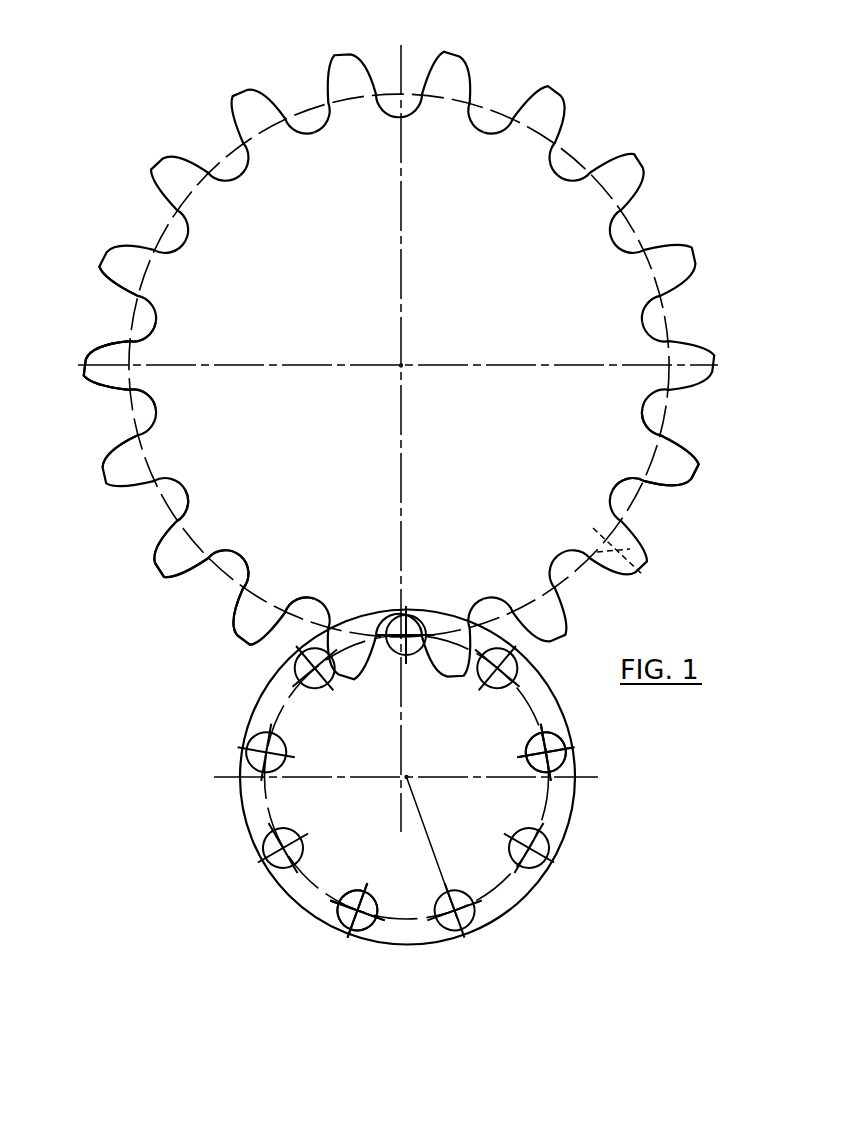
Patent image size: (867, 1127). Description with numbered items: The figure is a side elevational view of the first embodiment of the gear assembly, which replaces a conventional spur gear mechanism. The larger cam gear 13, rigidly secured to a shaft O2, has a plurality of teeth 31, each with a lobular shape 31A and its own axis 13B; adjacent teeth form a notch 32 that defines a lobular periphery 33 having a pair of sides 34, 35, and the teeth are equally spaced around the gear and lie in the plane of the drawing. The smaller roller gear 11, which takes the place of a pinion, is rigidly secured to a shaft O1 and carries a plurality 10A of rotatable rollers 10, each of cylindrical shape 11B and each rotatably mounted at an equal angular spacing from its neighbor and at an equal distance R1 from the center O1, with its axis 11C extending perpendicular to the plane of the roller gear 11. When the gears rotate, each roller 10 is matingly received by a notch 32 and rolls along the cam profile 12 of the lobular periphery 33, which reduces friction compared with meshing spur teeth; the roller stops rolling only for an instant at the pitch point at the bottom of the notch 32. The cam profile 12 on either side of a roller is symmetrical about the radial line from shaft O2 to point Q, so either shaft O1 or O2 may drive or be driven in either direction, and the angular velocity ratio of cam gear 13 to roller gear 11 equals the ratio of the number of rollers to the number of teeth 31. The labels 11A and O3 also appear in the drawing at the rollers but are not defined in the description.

The rotatable roller 10 is at (318, 690).
The plurality of rotatable rollers 10A is at (196, 778).
The roller gear 11 is at (240, 828).
The roller 11A is at (540, 751).
The cylindrical shape 11B is at (565, 733).
The roller axis 11C is at (546, 860).
The cam profile 12 is at (180, 576).
The cam gear 13 is at (302, 460).
The tooth axis 13B is at (640, 547).
The teeth 31 is at (138, 509).
The lobular shape 31A is at (712, 426).
The notch 32 is at (606, 90).
The lobular periphery 33 is at (84, 416).
The side of lobular periphery 34 is at (110, 283).
The side of lobular periphery 35 is at (110, 338).
The shaft O1 is at (410, 780).
The shaft O2 is at (403, 368).
The roller center O3 is at (296, 682).
The symmetry point Q is at (421, 619).
The equal distance from center R1 is at (443, 873).